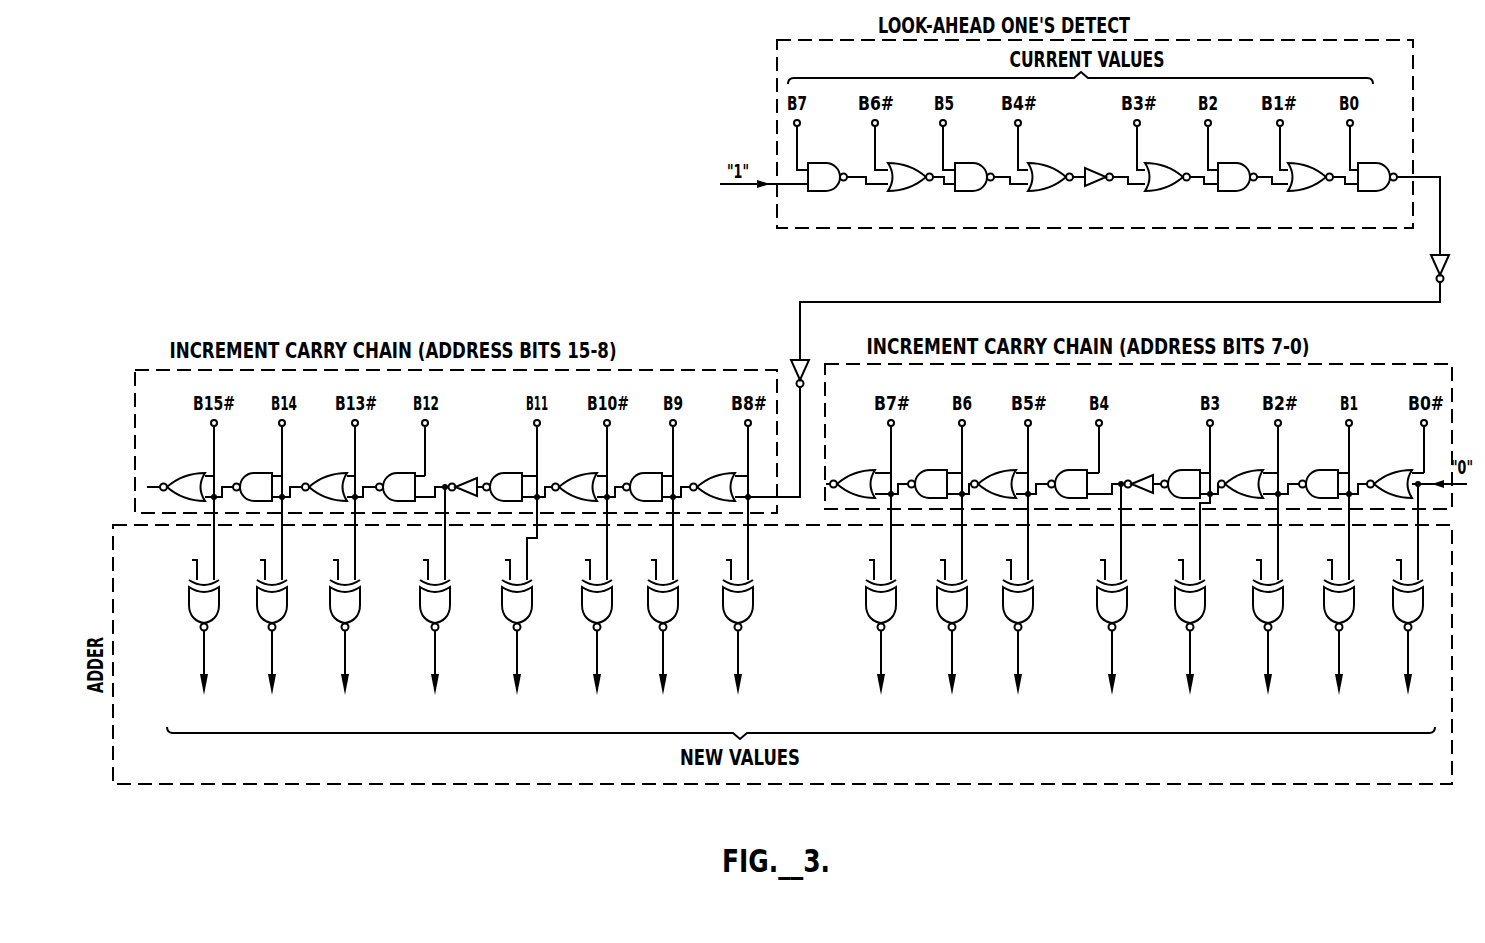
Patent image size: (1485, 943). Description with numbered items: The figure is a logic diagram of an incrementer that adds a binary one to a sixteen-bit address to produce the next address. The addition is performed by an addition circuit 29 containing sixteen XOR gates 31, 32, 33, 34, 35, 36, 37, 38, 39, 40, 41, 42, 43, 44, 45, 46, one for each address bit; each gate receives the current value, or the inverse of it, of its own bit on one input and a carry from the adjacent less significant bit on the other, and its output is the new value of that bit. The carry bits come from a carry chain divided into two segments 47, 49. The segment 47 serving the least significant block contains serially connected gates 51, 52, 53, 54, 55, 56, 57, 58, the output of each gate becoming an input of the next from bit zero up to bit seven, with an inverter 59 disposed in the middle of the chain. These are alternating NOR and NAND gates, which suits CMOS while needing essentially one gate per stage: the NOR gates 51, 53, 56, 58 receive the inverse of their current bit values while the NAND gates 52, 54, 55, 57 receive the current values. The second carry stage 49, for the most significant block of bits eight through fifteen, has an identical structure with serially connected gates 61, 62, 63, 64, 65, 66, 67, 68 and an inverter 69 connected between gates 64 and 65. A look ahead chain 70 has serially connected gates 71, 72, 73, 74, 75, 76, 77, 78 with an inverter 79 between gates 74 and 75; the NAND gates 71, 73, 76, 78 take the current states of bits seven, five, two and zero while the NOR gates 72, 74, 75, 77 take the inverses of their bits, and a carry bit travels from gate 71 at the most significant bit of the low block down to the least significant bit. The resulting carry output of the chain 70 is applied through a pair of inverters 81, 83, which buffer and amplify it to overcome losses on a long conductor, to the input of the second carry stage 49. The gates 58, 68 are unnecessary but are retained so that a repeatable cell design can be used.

The addition circuit 29 is at (213, 804).
The XOR gate 31 is at (1405, 612).
The XOR gate 32 is at (1336, 612).
The XOR gate 33 is at (1265, 612).
The XOR gate 34 is at (1187, 612).
The XOR gate 35 is at (1109, 612).
The XOR gate 36 is at (1015, 612).
The XOR gate 37 is at (949, 612).
The XOR gate 38 is at (878, 612).
The XOR gate 39 is at (735, 612).
The XOR gate 40 is at (660, 612).
The XOR gate 41 is at (594, 612).
The XOR gate 42 is at (514, 612).
The XOR gate 43 is at (432, 612).
The XOR gate 44 is at (342, 612).
The XOR gate 45 is at (269, 612).
The XOR gate 46 is at (201, 612).
The carry chain segment 47 is at (856, 371).
The carry chain segment 49 is at (653, 379).
The NOR gate 51 is at (1400, 470).
The NAND gate 52 is at (1326, 470).
The NOR gate 53 is at (1251, 470).
The NAND gate 54 is at (1188, 470).
The NAND gate 55 is at (1075, 470).
The NOR gate 56 is at (1004, 470).
The NAND gate 57 is at (935, 470).
The NOR gate 58 is at (864, 470).
The inverter 59 is at (1149, 473).
The NOR gate 61 is at (723, 473).
The NAND gate 62 is at (651, 473).
The NOR gate 63 is at (585, 473).
The NAND gate 64 is at (512, 473).
The NAND gate 65 is at (403, 473).
The NOR gate 66 is at (334, 473).
The NAND gate 67 is at (259, 473).
The NOR gate 68 is at (192, 473).
The inverter 69 is at (473, 476).
The look ahead chain 70 is at (854, 226).
The NAND gate 71 is at (826, 163).
The NOR gate 72 is at (908, 163).
The NAND gate 73 is at (973, 163).
The NOR gate 74 is at (1048, 163).
The NOR gate 75 is at (1165, 163).
The NAND gate 76 is at (1236, 163).
The NOR gate 77 is at (1308, 163).
The NAND gate 78 is at (1376, 163).
The inverter 79 is at (1091, 168).
The inverter 81 is at (1431, 263).
The inverter 83 is at (799, 358).